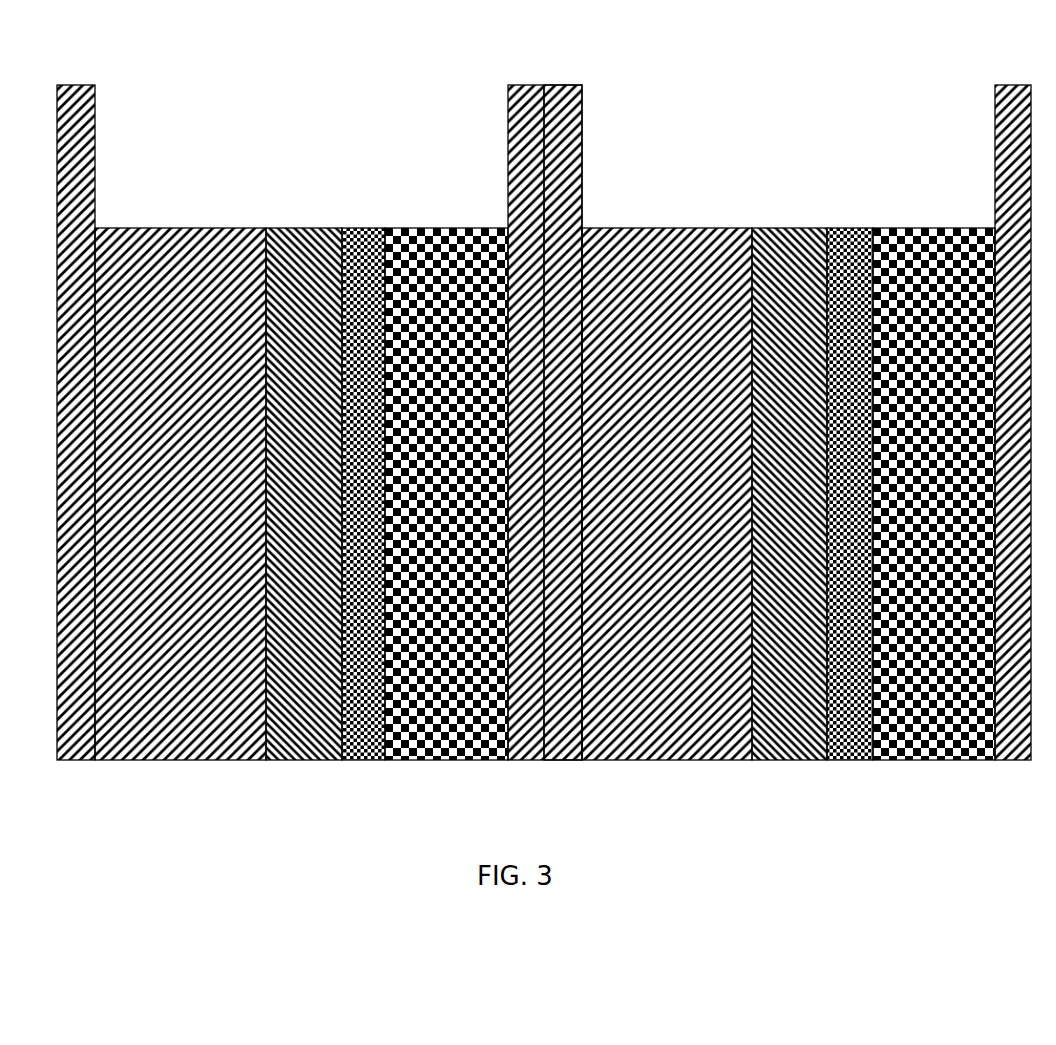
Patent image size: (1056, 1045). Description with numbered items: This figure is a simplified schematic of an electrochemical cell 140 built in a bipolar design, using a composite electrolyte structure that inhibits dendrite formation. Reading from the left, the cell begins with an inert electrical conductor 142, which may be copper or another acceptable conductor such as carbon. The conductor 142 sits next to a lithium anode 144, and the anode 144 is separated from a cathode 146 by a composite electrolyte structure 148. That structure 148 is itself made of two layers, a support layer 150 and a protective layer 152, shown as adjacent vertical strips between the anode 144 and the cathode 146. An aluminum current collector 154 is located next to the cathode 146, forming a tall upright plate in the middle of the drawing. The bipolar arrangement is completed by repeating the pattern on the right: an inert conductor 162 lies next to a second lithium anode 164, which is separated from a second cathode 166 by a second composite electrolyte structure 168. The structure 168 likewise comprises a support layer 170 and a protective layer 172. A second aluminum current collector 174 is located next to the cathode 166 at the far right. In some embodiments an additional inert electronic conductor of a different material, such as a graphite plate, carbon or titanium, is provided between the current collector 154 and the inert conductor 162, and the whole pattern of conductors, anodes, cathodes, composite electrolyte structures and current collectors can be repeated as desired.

The electrochemical cell 140 is at (544, 430).
The inert electrical conductor 142 is at (97, 107).
The lithium anode 144 is at (203, 227).
The cathode 146 is at (474, 760).
The composite electrolyte structure 148 is at (387, 489).
The support layer 150 is at (312, 760).
The protective layer 152 is at (375, 760).
The aluminum current collector 154 is at (508, 107).
The inert conductor 162 is at (583, 110).
The lithium anode 164 is at (694, 230).
The cathode 166 is at (964, 760).
The composite electrolyte structure 168 is at (873, 493).
The support layer 170 is at (802, 760).
The protective layer 172 is at (865, 760).
The aluminum current collector 174 is at (995, 108).